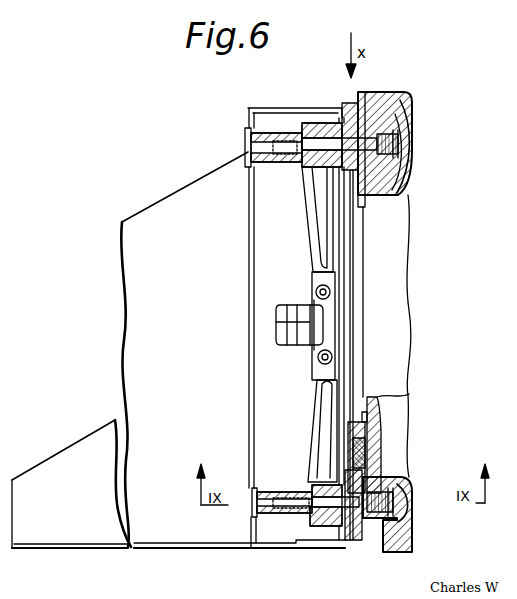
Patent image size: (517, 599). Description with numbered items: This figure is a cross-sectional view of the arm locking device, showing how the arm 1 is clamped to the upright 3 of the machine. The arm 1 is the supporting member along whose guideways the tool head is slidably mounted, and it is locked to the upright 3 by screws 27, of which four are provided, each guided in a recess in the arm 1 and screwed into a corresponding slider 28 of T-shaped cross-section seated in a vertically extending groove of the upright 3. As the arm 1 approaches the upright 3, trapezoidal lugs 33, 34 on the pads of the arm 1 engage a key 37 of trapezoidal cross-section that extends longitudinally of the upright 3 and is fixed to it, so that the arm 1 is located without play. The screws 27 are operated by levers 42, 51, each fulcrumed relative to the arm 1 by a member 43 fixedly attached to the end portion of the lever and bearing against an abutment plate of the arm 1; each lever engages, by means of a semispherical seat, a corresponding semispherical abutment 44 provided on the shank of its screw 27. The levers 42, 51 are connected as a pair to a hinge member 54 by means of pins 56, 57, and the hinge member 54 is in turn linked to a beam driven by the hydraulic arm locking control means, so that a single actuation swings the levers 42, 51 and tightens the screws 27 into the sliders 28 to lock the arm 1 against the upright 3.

The arm 1 is at (171, 222).
The upright 3 is at (360, 247).
The screw 27 is at (322, 143).
The slider 28 is at (402, 156).
The trapezoidal lug 33 is at (380, 424).
The trapezoidal lug 34 is at (371, 470).
The key 37 is at (367, 447).
The lever 42 is at (311, 405).
The member 43 is at (355, 541).
The semispherical abutment 44 is at (301, 132).
The lever 51 is at (305, 228).
The hinge member 54 is at (330, 320).
The pin 56 is at (318, 290).
The pin 57 is at (322, 362).